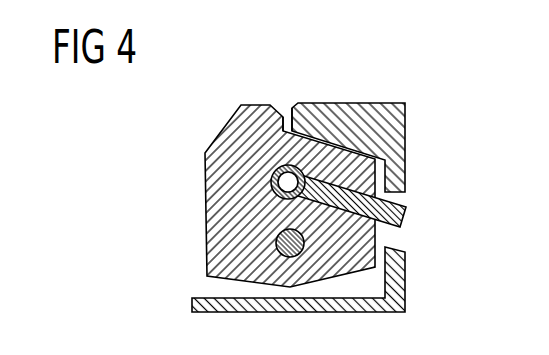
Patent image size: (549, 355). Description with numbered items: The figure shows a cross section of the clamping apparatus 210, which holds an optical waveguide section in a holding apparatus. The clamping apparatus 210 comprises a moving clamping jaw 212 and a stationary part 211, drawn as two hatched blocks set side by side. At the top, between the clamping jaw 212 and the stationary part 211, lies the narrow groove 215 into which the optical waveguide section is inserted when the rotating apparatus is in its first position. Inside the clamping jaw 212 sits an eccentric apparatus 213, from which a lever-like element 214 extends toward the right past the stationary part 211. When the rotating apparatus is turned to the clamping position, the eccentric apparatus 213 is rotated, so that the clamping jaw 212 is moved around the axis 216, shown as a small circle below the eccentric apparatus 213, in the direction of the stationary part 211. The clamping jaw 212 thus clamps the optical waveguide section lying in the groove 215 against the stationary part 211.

The clamping apparatus 210 is at (136, 217).
The stationary part 211 is at (400, 126).
The clamping jaw 212 is at (216, 145).
The eccentric apparatus 213 is at (271, 179).
The lever 214 is at (407, 216).
The groove 215 is at (284, 118).
The axis 216 is at (278, 237).